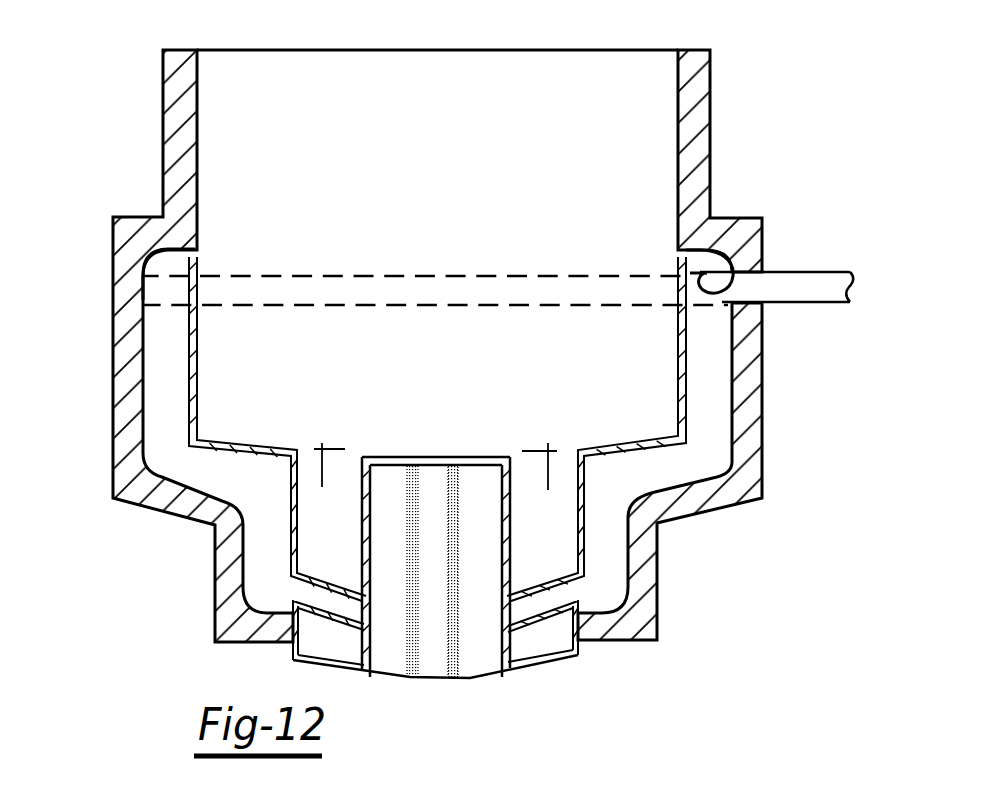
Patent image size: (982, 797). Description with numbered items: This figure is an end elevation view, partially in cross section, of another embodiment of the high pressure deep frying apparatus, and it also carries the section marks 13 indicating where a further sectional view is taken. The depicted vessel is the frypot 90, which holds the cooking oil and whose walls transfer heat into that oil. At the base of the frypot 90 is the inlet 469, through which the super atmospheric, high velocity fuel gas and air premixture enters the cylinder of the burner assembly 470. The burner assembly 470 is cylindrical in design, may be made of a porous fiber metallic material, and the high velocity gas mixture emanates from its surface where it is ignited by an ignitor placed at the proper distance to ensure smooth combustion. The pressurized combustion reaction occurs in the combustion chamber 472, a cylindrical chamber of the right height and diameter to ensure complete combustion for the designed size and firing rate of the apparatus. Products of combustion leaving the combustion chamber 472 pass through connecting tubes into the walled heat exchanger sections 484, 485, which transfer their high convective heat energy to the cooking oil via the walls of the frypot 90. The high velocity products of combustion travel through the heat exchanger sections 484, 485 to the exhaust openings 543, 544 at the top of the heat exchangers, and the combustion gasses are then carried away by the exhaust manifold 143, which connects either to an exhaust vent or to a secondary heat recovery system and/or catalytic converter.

The frypot 90 is at (451, 321).
The heat exchanger section 484 is at (153, 330).
The heat exchanger section 485 is at (722, 435).
The exhaust opening 543 is at (143, 296).
The exhaust opening 544 is at (758, 280).
The exhaust manifold 143 is at (818, 297).
The combustion chamber 472 is at (386, 478).
The burner assembly 470 is at (457, 642).
The inlet 469 is at (435, 683).
The section line 13- 13 is at (435, 476).